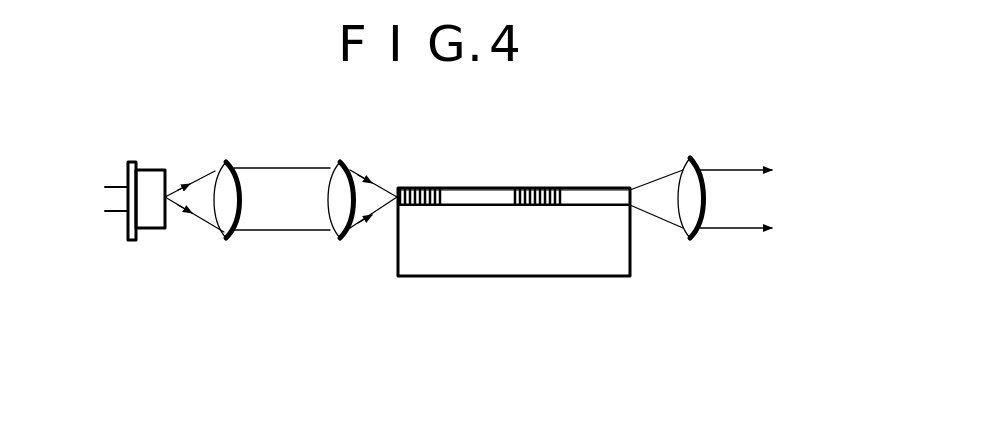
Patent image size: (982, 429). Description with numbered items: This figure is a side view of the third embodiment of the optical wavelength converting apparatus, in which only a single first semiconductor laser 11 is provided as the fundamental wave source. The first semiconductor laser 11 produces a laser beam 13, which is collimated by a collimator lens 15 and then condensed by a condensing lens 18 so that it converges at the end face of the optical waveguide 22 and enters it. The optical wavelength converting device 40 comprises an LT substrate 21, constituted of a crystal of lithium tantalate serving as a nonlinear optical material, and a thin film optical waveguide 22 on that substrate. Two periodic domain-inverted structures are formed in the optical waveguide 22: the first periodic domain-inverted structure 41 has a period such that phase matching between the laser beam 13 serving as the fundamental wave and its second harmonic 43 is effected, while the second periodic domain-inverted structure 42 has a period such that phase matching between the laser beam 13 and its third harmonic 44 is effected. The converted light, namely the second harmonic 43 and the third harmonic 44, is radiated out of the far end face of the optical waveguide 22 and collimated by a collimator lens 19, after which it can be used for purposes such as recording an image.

The first semiconductor laser 11 is at (158, 170).
The laser beam 13 is at (206, 172).
The collimator lens 15 is at (241, 186).
The condensing lens 18 is at (328, 190).
The collimator lens 19 is at (688, 190).
The LT substrate 21 is at (455, 252).
The optical waveguide 22 is at (478, 196).
The optical wavelength converting device 40 is at (572, 286).
The first periodic domain-inverted structure 41 is at (418, 186).
The second periodic domain-inverted structure 42 is at (545, 186).
The second harmonic 43 is at (660, 219).
The third harmonic 44 is at (701, 231).